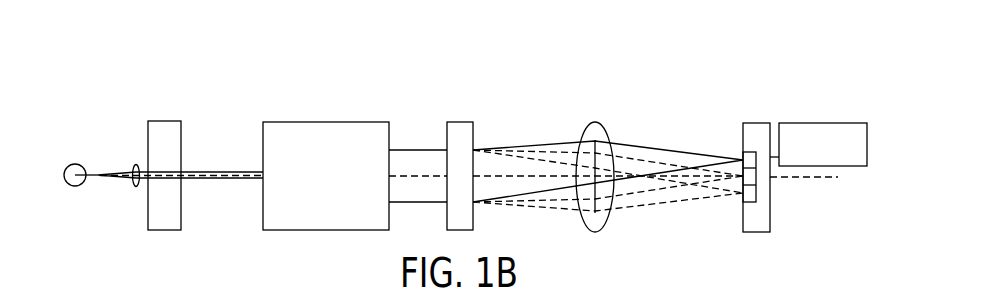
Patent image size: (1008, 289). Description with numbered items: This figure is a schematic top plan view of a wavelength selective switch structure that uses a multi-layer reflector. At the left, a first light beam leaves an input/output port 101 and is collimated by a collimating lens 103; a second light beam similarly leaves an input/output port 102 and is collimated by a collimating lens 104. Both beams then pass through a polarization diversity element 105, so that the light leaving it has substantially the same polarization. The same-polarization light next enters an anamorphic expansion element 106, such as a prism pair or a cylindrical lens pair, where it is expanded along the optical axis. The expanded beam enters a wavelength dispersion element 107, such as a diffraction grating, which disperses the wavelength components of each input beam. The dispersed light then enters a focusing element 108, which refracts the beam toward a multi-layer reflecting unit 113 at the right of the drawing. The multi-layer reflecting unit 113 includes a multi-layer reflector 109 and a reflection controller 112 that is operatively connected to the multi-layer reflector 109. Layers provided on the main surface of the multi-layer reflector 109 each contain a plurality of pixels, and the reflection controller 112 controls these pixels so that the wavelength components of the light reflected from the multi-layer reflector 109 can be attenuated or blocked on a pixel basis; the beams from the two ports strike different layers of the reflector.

The input/output port 101 is at (75, 164).
The input/output port 102 is at (67, 146).
The collimating lens 103 is at (136, 165).
The collimating lens 104 is at (124, 146).
The polarization diversity element 105 is at (172, 121).
The anamorphic expansion element 106 is at (354, 122).
The wavelength dispersion element 107 is at (467, 121).
The focusing element 108 is at (597, 122).
The multi-layer reflector 109 is at (760, 128).
The reflection controller 112 is at (840, 122).
The multi-layer reflecting unit 113 is at (868, 53).